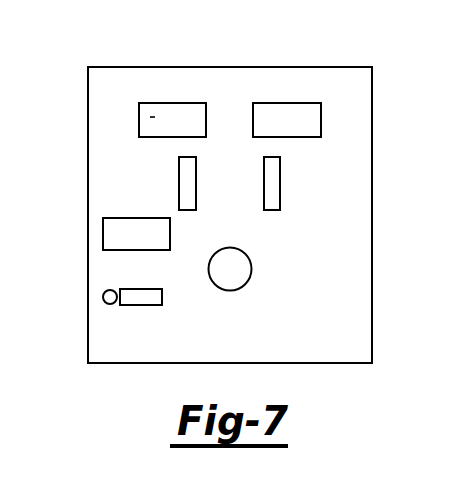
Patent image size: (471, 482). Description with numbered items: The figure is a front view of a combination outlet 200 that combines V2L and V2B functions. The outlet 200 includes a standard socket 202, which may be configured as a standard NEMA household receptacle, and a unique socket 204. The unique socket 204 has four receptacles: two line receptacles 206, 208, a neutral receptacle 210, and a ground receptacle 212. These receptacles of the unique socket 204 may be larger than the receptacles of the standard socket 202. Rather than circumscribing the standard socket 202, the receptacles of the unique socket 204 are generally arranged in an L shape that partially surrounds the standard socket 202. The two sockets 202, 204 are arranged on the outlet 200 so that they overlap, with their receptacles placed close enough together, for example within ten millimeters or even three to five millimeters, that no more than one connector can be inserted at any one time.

The combination outlet 200 is at (332, 67).
The standard socket 202 is at (280, 182).
The unique socket 204 is at (174, 103).
The line receptacle 206 is at (150, 117).
The line receptacle 208 is at (103, 233).
The neutral receptacle 210 is at (288, 103).
The ground receptacle 212 is at (141, 305).